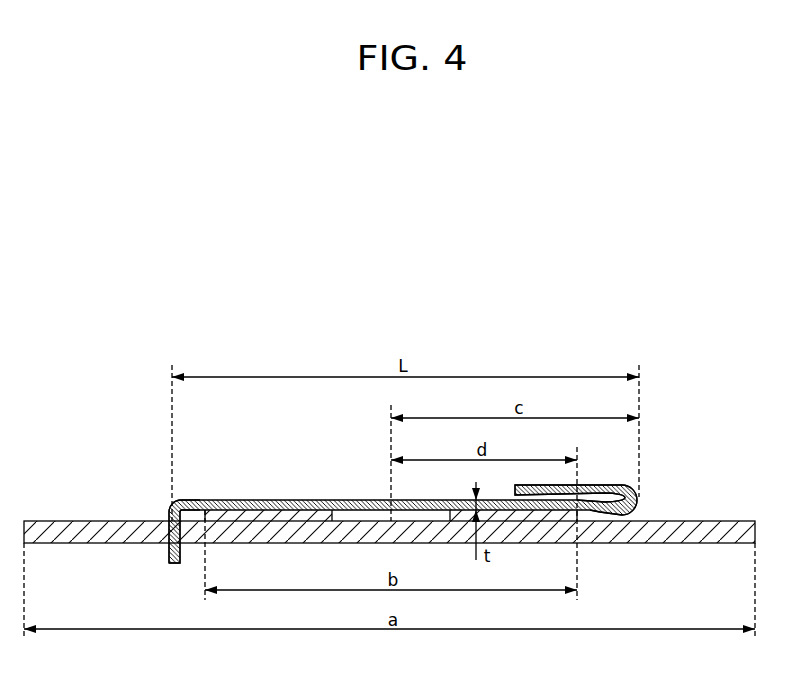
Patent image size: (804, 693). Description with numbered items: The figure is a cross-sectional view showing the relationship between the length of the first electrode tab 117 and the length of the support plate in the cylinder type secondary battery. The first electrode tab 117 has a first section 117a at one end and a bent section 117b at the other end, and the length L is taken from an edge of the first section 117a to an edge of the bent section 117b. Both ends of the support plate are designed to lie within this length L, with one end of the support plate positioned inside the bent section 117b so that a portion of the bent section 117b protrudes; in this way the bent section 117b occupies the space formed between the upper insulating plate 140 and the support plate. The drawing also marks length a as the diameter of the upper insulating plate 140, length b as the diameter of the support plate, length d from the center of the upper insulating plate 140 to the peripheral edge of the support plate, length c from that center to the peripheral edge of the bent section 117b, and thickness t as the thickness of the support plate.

The upper insulating plate 140 is at (54, 527).
The first electrode tab 117 is at (268, 499).
The first section 117a is at (160, 500).
The bent section 117b is at (654, 486).